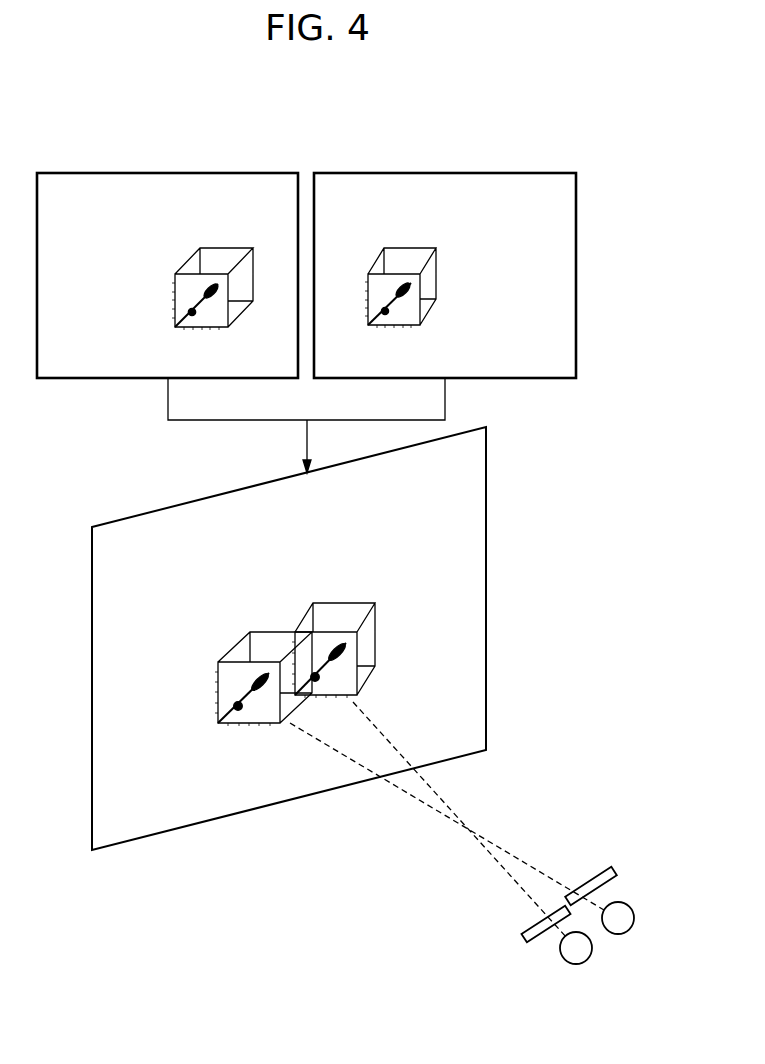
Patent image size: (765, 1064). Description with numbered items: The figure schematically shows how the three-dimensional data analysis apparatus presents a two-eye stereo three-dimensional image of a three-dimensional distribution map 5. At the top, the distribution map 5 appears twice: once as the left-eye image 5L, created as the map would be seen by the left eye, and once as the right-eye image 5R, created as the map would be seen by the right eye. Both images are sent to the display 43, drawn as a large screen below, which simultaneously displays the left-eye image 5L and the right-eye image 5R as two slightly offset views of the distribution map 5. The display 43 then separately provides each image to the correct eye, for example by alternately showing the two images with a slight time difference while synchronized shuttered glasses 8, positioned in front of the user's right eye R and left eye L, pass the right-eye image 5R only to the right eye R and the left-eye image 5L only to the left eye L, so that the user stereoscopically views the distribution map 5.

The left-eye image 5L is at (103, 173).
The right-eye image 5R is at (410, 173).
The three-dimensional distribution map 5 is at (225, 248).
The display 43 is at (486, 579).
The shuttered glasses 8 is at (600, 869).
The right eye R is at (634, 918).
The left eye L is at (576, 964).